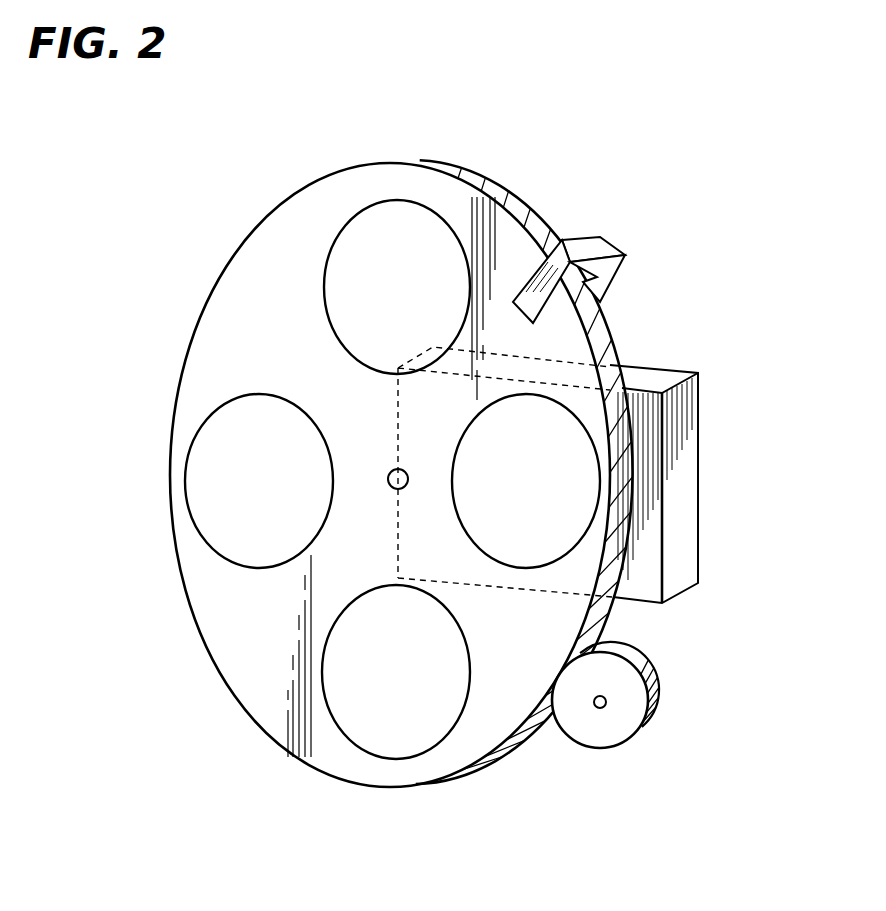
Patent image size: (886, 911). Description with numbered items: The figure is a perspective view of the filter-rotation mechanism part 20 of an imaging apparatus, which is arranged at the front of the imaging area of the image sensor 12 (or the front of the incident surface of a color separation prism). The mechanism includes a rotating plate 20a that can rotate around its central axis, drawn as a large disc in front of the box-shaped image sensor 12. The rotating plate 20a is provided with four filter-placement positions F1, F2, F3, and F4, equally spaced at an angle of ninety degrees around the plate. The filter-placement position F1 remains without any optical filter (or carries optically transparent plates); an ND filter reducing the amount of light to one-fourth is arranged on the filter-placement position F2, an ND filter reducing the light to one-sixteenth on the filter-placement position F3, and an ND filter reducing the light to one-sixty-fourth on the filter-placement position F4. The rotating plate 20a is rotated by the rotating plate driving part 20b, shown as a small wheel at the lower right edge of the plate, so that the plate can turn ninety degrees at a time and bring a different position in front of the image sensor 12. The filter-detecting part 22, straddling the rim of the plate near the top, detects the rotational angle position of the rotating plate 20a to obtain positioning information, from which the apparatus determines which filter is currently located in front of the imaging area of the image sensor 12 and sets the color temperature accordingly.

The filter-rotation mechanism part 20 is at (572, 208).
The rotating plate 20a is at (262, 296).
The rotating plate driving part 20b is at (630, 683).
The filter-detecting part 22 is at (618, 242).
The image sensor 12 is at (677, 518).
The filter-placement position F1 is at (558, 462).
The filter-placement position F2 is at (398, 738).
The filter-placement position F3 is at (240, 478).
The filter-placement position F4 is at (406, 238).